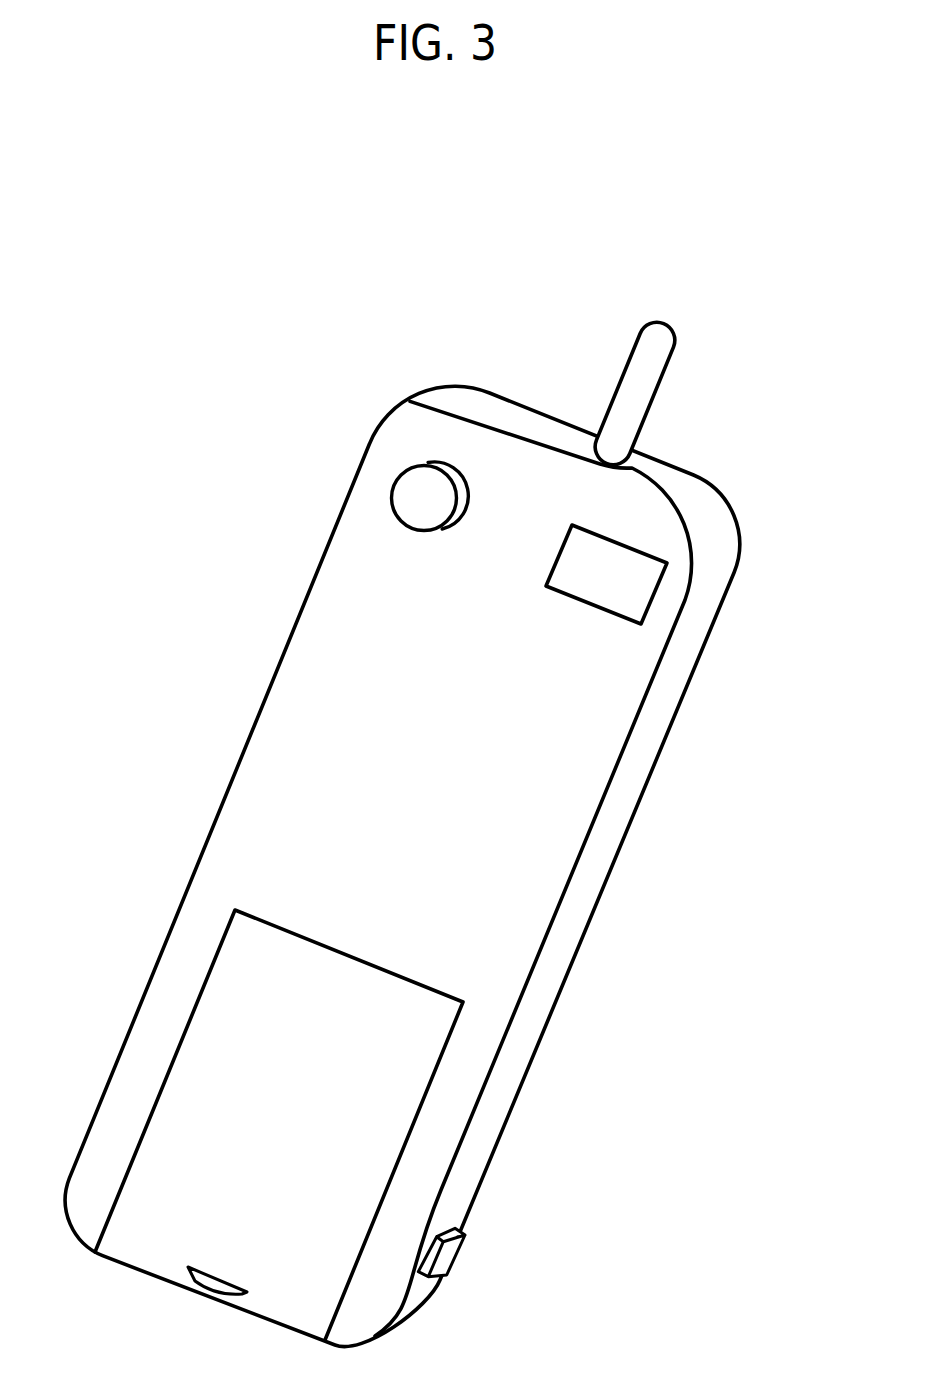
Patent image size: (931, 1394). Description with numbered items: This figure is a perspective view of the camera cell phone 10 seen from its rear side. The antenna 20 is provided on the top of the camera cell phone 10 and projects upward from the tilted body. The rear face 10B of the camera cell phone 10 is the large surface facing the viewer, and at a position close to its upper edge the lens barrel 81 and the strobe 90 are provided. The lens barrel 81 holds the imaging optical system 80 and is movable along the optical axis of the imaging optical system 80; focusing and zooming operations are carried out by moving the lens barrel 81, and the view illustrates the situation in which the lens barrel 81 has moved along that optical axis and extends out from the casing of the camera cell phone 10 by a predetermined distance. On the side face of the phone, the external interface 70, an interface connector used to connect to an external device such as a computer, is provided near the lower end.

The camera cell phone 10 is at (413, 335).
The rear face 10B is at (587, 758).
The antenna 20 is at (658, 390).
The external interface 70 is at (450, 1253).
The imaging optical system 80 is at (417, 495).
The lens barrel 81 is at (407, 530).
The strobe 90 is at (640, 592).